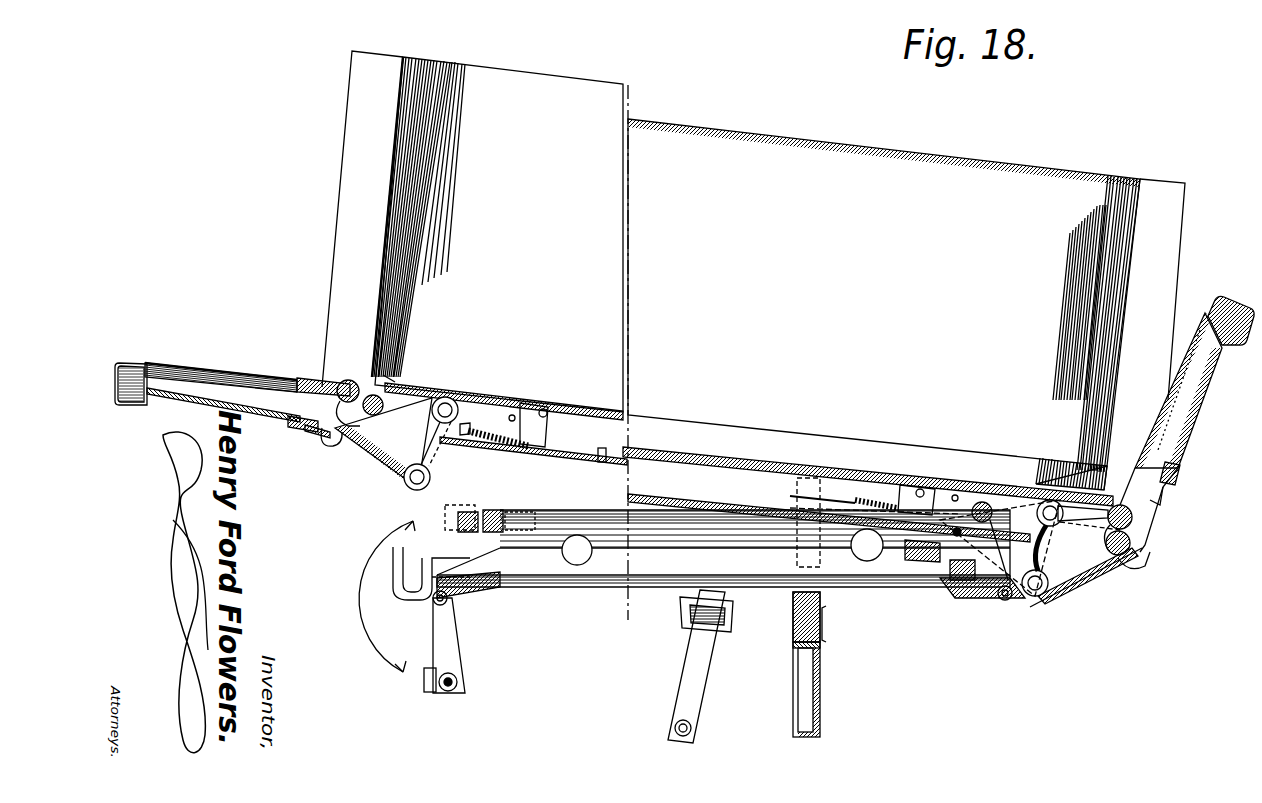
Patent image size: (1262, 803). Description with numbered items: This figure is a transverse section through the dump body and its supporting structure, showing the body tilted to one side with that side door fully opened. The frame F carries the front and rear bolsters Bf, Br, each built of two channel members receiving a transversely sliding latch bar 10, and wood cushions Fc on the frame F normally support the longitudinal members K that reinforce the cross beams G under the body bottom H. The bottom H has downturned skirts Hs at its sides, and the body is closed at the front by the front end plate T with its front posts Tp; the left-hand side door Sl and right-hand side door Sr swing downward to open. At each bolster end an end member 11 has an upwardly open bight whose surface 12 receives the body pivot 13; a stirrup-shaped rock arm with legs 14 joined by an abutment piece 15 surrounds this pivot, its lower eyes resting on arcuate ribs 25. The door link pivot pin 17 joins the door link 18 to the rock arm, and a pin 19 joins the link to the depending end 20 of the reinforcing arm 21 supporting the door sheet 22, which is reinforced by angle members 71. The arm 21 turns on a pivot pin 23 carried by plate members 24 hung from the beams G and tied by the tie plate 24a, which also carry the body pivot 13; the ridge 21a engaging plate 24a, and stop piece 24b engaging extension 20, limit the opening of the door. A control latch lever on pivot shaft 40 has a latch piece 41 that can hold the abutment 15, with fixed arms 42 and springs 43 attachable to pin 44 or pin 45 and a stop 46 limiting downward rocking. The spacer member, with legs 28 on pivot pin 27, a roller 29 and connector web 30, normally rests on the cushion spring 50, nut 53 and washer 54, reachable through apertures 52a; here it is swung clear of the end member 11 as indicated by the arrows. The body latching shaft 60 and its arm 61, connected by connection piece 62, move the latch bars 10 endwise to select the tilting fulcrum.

The front end plate T is at (752, 144).
The front posts Tp is at (350, 191).
The bottom of the body H is at (752, 461).
The cross beams G is at (707, 462).
The longitudinal members K is at (797, 495).
The latch bar 10 is at (596, 580).
The end member 11 is at (470, 595).
The bight surface 12 is at (1030, 598).
The body pivot 13 is at (1055, 632).
The legs of rock arm 14 is at (440, 458).
The abutment piece 15 is at (450, 403).
The door link pivot pin 17 is at (428, 406).
The door link 18 is at (400, 400).
The pin 19 is at (380, 396).
The depending end of reinforcing arm 20 is at (358, 420).
The reinforcing arm 21 is at (228, 376).
The ridge of door arm 21a is at (1183, 498).
The door sheet 22 is at (193, 375).
The pivot pin 23 is at (1133, 517).
The plate members 24 is at (1092, 575).
The tie plate 24a is at (1118, 597).
The stop piece 24b is at (383, 378).
The arcuate ribs 25 is at (346, 379).
The pivot pin 27 is at (447, 605).
The legs of spacer member 28 is at (452, 650).
The roller 29 is at (458, 690).
The connector web 30 is at (430, 688).
The pivot shaft 40 is at (545, 407).
The latch piece 41 is at (458, 388).
The fixed arms 42 is at (548, 430).
The springs 43 is at (505, 445).
The pin 44 is at (601, 462).
The pin 45 is at (470, 434).
The stop 46 is at (512, 414).
The cushion spring 50 is at (500, 520).
The apertures 52a is at (852, 544).
The nut 53 is at (945, 592).
The washer 54 is at (930, 582).
The body latching shaft 60 is at (691, 728).
The arm 61 is at (705, 652).
The connection piece 62 is at (718, 602).
The angle members 71 is at (298, 423).
The left-hand side door Sl is at (223, 409).
The right-hand side door Sr is at (1216, 426).
The downturned skirts Hs is at (328, 440).
The frame F is at (800, 700).
The wood cushions Fc is at (795, 628).
The front bolster Bf is at (824, 617).
The rear bolster Br is at (824, 637).